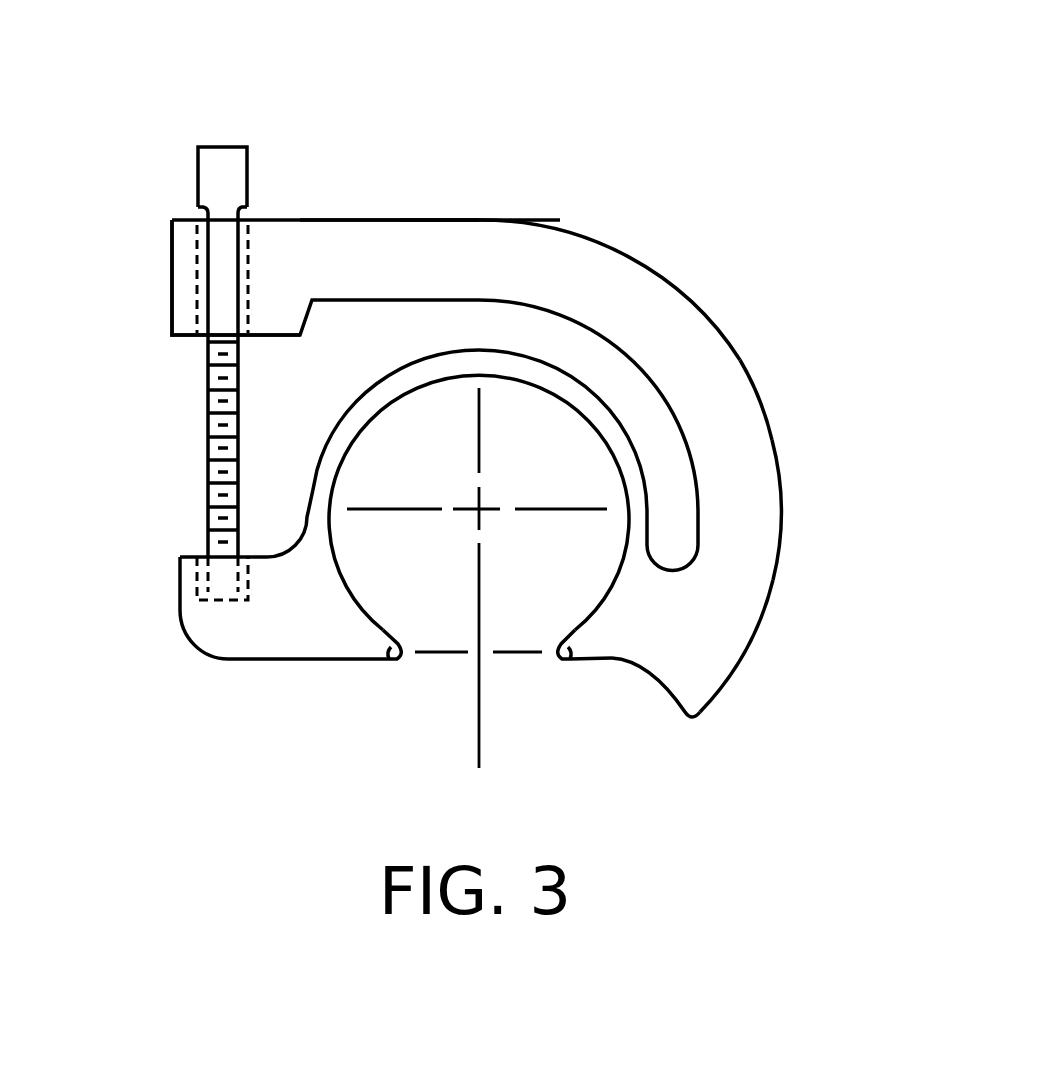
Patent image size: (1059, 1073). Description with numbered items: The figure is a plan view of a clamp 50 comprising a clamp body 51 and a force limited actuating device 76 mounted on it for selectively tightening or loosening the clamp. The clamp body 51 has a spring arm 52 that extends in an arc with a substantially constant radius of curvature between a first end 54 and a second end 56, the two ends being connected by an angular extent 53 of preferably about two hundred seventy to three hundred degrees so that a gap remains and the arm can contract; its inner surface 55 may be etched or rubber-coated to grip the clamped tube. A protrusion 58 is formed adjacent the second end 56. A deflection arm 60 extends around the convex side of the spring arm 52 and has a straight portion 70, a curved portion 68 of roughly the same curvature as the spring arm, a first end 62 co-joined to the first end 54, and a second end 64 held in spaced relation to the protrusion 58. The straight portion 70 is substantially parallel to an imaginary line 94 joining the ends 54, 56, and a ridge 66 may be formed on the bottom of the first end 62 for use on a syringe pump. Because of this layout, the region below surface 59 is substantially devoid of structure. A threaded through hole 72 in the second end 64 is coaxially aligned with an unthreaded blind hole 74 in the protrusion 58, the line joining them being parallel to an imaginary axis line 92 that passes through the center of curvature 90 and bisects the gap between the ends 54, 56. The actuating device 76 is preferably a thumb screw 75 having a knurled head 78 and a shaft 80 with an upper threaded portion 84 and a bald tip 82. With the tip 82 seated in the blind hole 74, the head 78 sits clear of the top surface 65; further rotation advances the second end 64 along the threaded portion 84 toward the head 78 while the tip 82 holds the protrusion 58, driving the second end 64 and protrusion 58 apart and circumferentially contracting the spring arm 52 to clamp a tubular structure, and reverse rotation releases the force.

The clamp 50 is at (632, 120).
The clamp body 51 is at (625, 250).
The spring arm 52 is at (505, 350).
The angular extent 53 is at (437, 375).
The first end of spring arm 54 is at (567, 660).
The inner surface of spring arm 55 is at (597, 433).
The second end of spring arm 56 is at (385, 668).
The protrusion 58 is at (222, 640).
The surface 59 is at (275, 663).
The deflection arm 60 is at (742, 360).
The first end of deflection arm 62 is at (765, 617).
The second end of deflection arm 64 is at (185, 240).
The top surface of deflection arm 65 is at (292, 220).
The ridge 66 is at (692, 725).
The curved portion of deflection arm 68 is at (752, 447).
The straight portion of deflection arm 70 is at (460, 226).
The threaded through hole 72 is at (185, 310).
The blind hole 74 is at (180, 612).
The thumb screw 75 is at (250, 137).
The actuating device 76 is at (160, 399).
The head 78 is at (221, 146).
The shaft 80 is at (250, 385).
The tip 82 is at (180, 580).
The threaded portion 84 is at (207, 468).
The center of curvature 90 is at (475, 517).
The imaginary axis line 92 is at (470, 698).
The imaginary line 94 is at (516, 650).